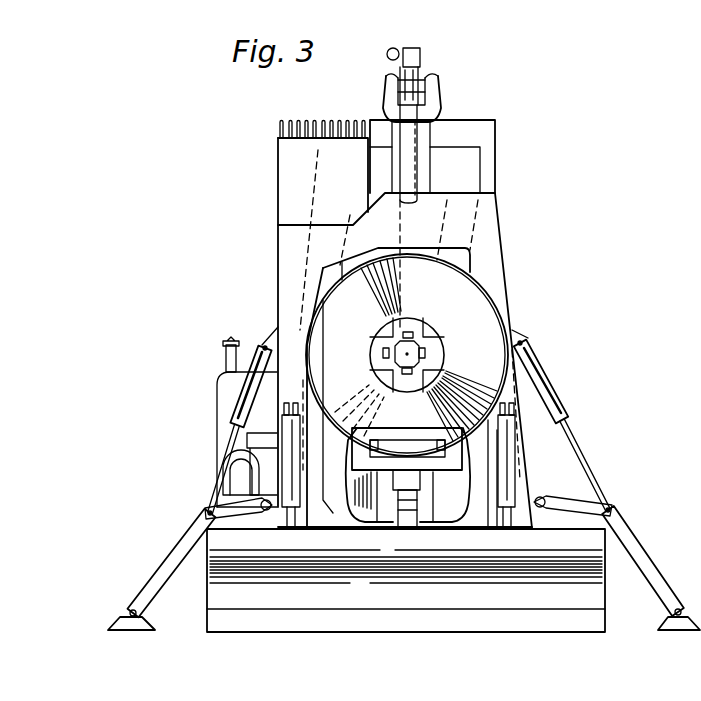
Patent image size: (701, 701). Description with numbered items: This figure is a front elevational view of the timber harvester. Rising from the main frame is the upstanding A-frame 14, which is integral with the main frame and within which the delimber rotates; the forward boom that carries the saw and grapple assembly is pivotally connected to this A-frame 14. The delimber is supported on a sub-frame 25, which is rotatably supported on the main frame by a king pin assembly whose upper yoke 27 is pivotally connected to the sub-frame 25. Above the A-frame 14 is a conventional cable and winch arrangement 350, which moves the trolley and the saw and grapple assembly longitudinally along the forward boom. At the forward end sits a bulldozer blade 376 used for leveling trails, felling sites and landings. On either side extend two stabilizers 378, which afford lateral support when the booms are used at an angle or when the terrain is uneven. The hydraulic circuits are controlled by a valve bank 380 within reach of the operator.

The A-frame 14 is at (490, 268).
The sub-frame 25 is at (453, 435).
The upper yoke 27 is at (445, 463).
The cable and winch arrangement 350 is at (432, 53).
The bulldozer blade 376 is at (343, 603).
The stabilizers 378 is at (180, 546).
The valve bank 380 is at (310, 118).